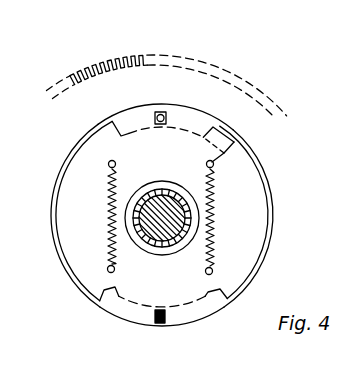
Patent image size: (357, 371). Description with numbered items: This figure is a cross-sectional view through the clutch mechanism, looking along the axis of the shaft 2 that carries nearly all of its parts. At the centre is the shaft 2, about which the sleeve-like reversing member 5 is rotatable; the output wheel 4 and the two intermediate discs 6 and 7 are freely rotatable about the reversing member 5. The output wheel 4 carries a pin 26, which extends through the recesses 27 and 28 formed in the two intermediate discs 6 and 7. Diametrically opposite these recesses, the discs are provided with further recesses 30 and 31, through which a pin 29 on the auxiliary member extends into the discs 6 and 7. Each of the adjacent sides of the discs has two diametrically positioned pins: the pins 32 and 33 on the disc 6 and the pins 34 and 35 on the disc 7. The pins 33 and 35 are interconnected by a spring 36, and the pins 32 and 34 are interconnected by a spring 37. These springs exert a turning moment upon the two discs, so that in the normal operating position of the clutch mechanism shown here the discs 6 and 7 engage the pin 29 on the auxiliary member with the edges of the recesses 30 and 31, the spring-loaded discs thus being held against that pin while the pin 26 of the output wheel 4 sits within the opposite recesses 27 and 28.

The shaft 2 is at (139, 234).
The output wheel 4 is at (147, 55).
The reversing member 5 is at (137, 223).
The intermediate disc 6 is at (135, 110).
The intermediate disc 7 is at (212, 127).
The pin 26 is at (161, 114).
The recess 27 is at (234, 132).
The recess 28 is at (112, 124).
The pin 29 is at (160, 324).
The recess 30 is at (97, 304).
The recess 31 is at (203, 312).
The pin 32 is at (228, 153).
The pin 33 is at (107, 272).
The pin 34 is at (213, 271).
The pin 35 is at (106, 165).
The spring 36 is at (217, 188).
The spring 37 is at (107, 202).